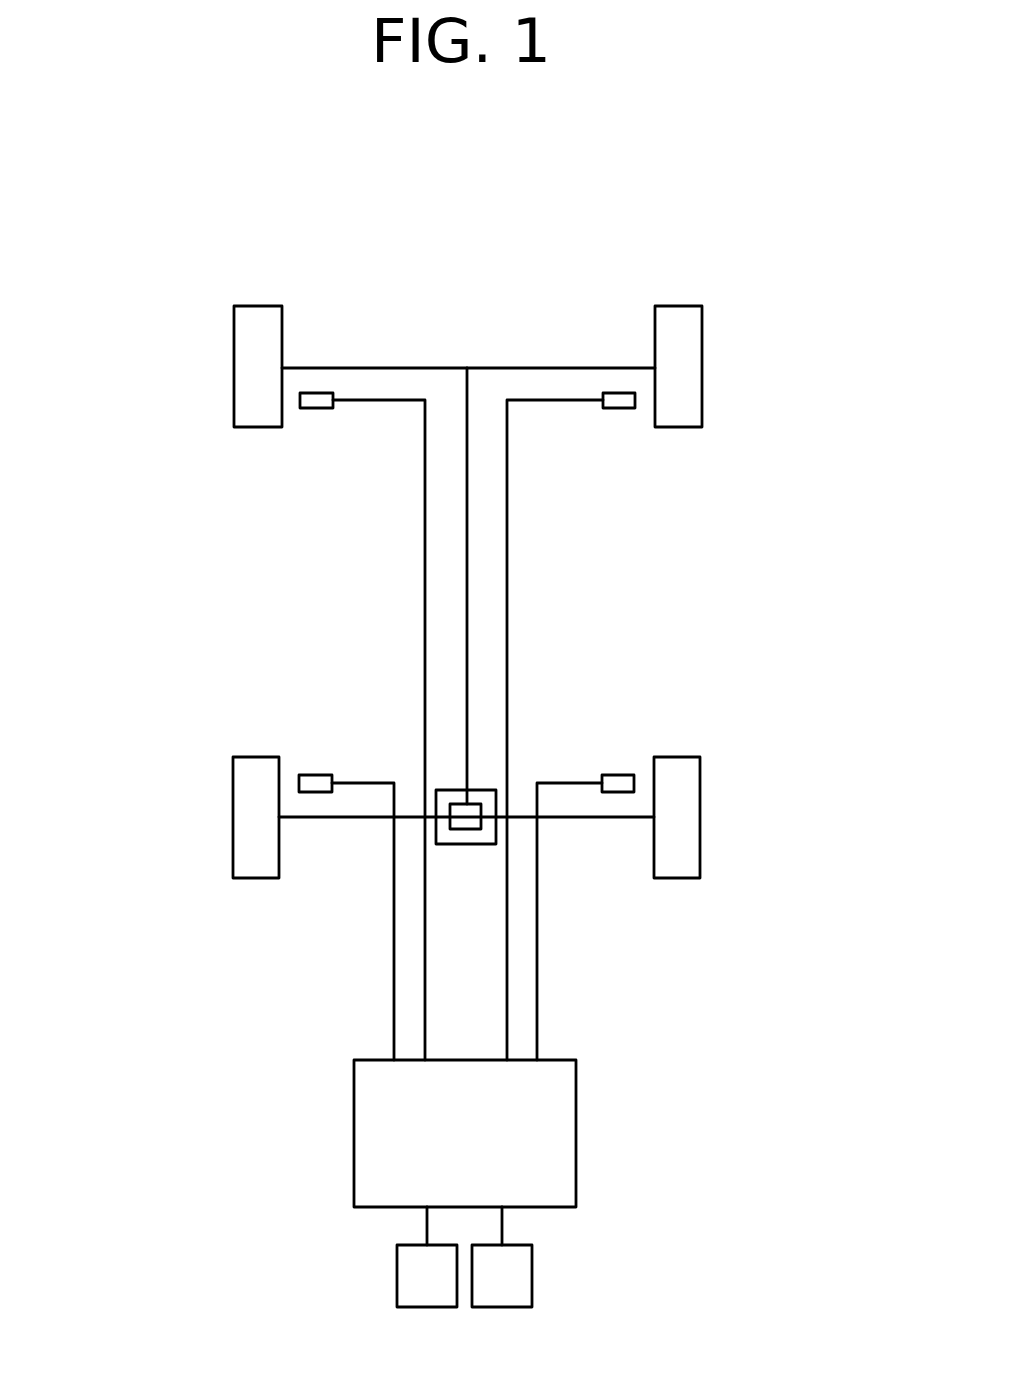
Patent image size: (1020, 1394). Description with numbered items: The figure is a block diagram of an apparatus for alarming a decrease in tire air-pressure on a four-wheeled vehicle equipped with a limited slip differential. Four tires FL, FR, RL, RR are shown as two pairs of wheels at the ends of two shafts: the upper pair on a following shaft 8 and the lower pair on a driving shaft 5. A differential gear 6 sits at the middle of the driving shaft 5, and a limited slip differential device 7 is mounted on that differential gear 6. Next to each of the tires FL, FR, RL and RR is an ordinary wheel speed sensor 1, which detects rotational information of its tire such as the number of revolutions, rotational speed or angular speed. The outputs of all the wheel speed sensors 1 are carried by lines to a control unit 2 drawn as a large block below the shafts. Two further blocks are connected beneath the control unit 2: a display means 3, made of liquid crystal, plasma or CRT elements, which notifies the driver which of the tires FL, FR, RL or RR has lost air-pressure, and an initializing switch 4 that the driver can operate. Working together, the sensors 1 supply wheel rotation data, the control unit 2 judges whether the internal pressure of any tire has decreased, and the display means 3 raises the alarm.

The wheel speed sensors 1 is at (316, 783).
The control unit 2 is at (540, 1150).
The display means 3 is at (515, 1277).
The initializing switch 4 is at (415, 1277).
The driving shaft 5 is at (351, 817).
The differential gear 6 is at (450, 853).
The limited slip differential device 7 is at (467, 817).
The following shaft 8 is at (403, 367).
The front left tire FL is at (250, 360).
The front right tire FR is at (685, 358).
The rear left tire RL is at (250, 810).
The rear right tire RR is at (683, 810).